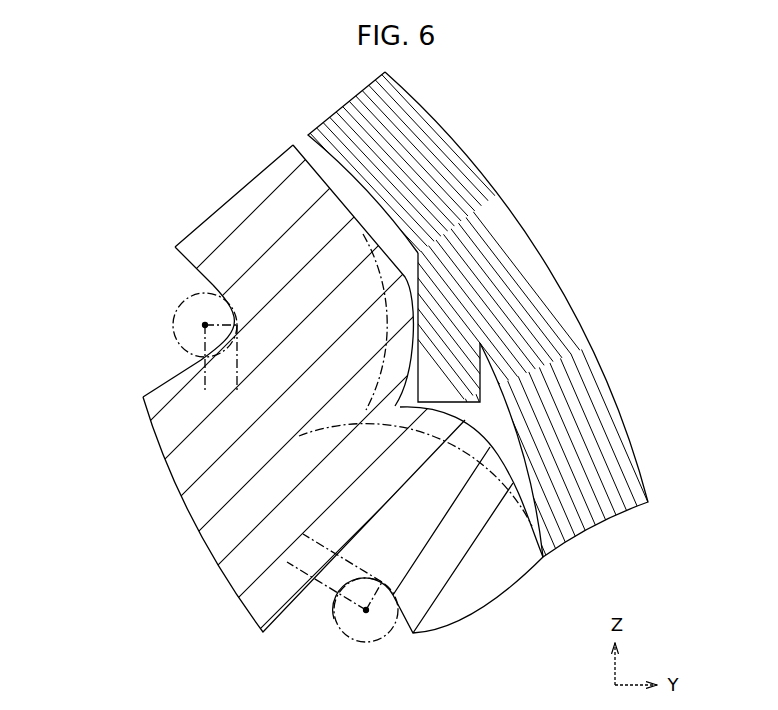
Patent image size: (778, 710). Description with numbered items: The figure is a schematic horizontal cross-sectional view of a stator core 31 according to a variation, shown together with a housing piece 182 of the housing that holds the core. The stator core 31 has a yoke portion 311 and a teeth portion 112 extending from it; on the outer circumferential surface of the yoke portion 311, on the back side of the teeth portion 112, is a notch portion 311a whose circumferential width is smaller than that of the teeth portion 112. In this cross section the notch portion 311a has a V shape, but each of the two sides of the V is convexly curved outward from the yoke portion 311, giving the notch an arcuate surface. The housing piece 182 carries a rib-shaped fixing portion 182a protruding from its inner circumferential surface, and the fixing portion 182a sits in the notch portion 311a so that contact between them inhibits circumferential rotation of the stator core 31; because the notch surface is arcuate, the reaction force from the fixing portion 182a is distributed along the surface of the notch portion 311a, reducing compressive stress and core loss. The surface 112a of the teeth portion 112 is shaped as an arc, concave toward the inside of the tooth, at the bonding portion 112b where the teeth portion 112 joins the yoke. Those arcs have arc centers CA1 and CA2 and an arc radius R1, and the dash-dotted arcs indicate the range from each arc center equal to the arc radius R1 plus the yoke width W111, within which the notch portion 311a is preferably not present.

The stator core 31 is at (217, 221).
The yoke portion 311 is at (472, 585).
The notch portion 311a is at (478, 432).
The teeth portion 112 is at (237, 530).
The surface of teeth portion 112a is at (165, 382).
The bonding portion 112b is at (185, 337).
The housing piece 182 is at (470, 157).
The fixing portion 182a is at (448, 355).
The arc center CA1 is at (203, 324).
The arc center CA2 is at (334, 619).
The yoke width W111 is at (318, 181).
The arc radius R1 is at (205, 386).